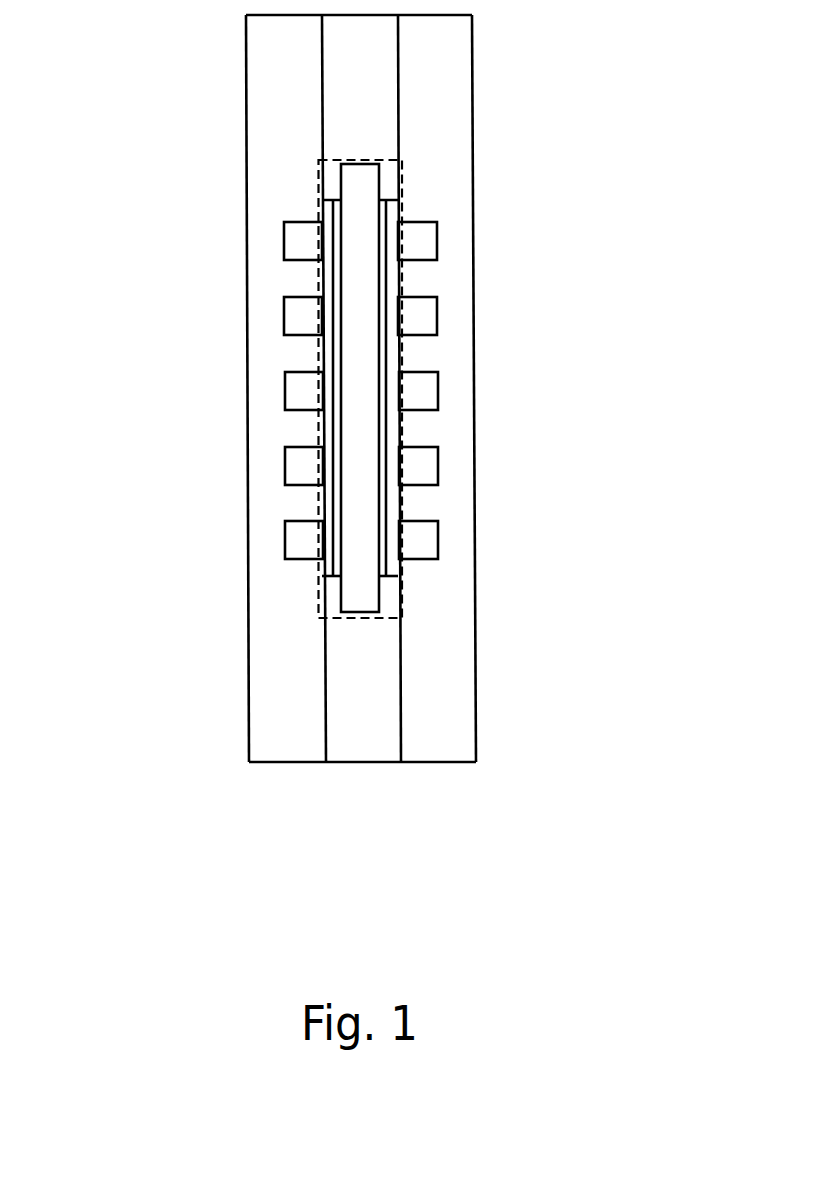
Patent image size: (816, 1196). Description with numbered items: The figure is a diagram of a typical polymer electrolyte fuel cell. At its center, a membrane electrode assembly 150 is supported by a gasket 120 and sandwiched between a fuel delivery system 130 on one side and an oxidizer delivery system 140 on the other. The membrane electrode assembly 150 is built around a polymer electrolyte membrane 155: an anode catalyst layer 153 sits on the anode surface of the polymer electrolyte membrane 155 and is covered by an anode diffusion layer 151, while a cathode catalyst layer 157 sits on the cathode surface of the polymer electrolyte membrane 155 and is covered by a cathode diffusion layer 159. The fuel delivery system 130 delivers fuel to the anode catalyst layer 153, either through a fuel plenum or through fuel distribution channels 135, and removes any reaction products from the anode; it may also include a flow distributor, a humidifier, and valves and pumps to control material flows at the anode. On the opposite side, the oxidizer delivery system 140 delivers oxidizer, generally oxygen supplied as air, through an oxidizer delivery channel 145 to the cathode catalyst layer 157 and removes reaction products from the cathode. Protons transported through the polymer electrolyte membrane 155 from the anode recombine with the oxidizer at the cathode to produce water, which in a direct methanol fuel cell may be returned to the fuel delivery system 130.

The gasket 120 is at (336, 82).
The fuel delivery system 130 is at (264, 728).
The oxidizer delivery system 140 is at (412, 728).
The fuel distribution channels 135 is at (303, 392).
The oxidizer delivery channel 145 is at (417, 391).
The membrane electrode assembly 150 is at (340, 161).
The anode diffusion layer 151 is at (330, 578).
The anode catalyst layer 153 is at (333, 200).
The polymer electrolyte membrane 155 is at (380, 168).
The cathode catalyst layer 157 is at (386, 201).
The cathode diffusion layer 159 is at (390, 578).